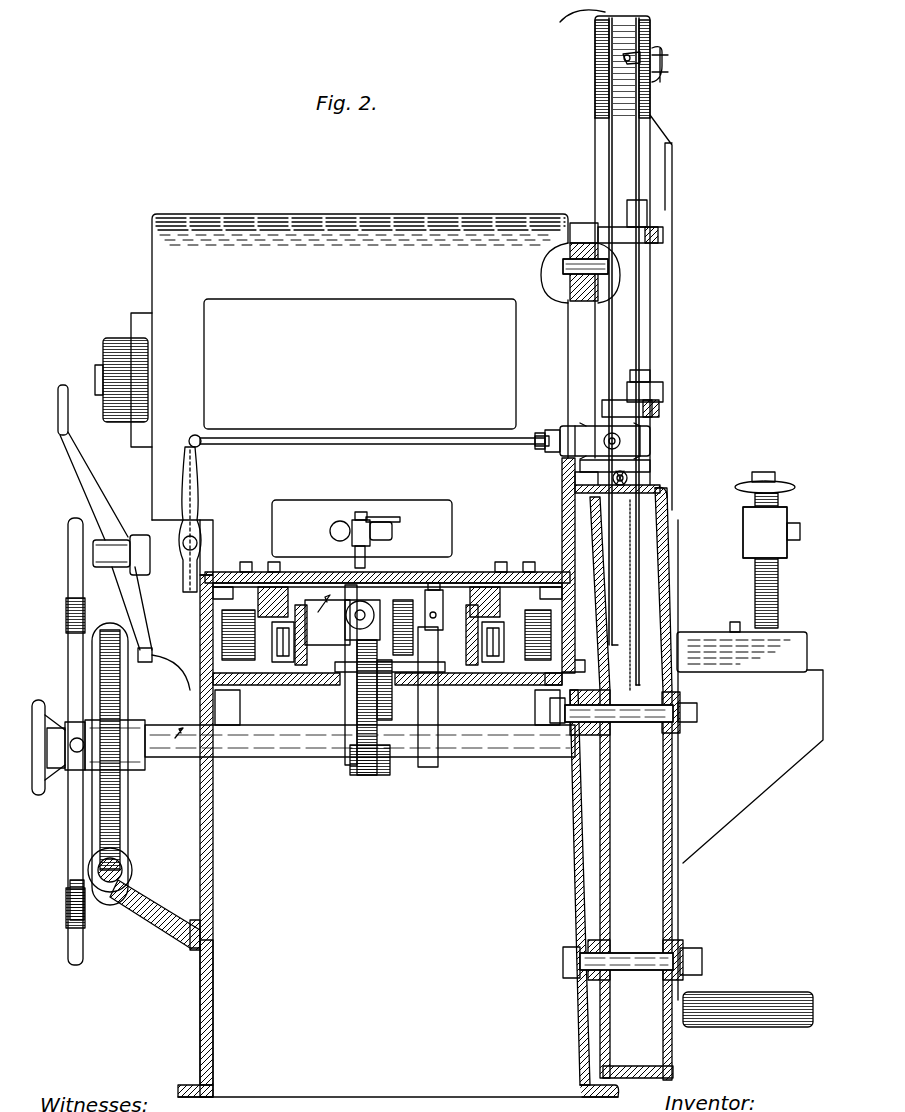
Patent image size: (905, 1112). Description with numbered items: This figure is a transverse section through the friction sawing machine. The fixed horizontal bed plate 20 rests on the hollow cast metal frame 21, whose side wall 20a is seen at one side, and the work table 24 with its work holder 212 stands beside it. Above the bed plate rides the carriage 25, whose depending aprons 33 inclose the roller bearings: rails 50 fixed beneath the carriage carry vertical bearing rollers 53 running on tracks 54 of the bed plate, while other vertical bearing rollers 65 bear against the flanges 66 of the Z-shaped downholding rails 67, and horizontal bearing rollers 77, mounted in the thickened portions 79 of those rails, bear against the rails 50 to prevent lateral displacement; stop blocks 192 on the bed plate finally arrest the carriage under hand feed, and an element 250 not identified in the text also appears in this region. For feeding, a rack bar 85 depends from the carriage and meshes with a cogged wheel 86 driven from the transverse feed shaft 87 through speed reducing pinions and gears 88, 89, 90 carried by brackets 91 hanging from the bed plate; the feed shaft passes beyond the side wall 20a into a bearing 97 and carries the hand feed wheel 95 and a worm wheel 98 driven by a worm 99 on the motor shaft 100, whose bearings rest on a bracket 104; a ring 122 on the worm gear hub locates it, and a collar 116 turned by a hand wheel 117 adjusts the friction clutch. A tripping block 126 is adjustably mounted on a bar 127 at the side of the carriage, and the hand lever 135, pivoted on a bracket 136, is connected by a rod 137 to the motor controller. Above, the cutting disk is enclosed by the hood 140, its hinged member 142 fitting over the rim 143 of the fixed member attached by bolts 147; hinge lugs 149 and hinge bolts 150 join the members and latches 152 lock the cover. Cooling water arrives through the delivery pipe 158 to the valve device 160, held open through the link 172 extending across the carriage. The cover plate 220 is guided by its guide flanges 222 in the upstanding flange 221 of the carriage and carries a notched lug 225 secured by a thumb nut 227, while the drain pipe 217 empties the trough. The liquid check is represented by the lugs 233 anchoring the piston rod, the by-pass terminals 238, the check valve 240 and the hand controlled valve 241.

The rim 143 is at (563, 26).
The hood 140 is at (655, 22).
The latches or keepers 152 is at (660, 62).
The outer hinged member 142 is at (655, 116).
The bolts 147 is at (590, 248).
The hinge bolts 150 is at (648, 203).
The hinge lugs 149 is at (650, 400).
The valve device 160 is at (578, 438).
The delivery pipe 158 is at (622, 437).
The notched lug 225 is at (628, 464).
The thumb nut 227 is at (635, 477).
The upstanding flange 221 is at (560, 480).
The guide flanges 222 is at (566, 505).
The cover plate 220 is at (665, 522).
The work holder 212 is at (780, 580).
The work table 24 is at (740, 780).
The drain pipe 217 is at (780, 1028).
The rails 50 is at (352, 216).
The link 172 is at (312, 438).
The tripping block 126 is at (183, 580).
The link or rod 137 is at (183, 568).
The hand lever 135 is at (85, 488).
The bracket 136 is at (140, 540).
The hand feed wheel 95 is at (68, 635).
The vertical bearing rollers 53 is at (228, 595).
The carriage 25 is at (395, 575).
The check valve 240 is at (340, 513).
The hand controlled valve 241 is at (378, 516).
The terminals 238 is at (358, 520).
The lugs 233 is at (325, 558).
The rack bar 85 is at (410, 572).
The flanges 66 is at (284, 600).
The horizontal bearing rollers 77 is at (295, 600).
The bar 127 is at (385, 635).
The vertical bearing rollers 65 is at (286, 668).
The eccentric 250 is at (338, 621).
The cogged wheel 86 is at (413, 615).
The thickened portions 79 is at (432, 660).
The brackets 91 is at (345, 708).
The speed reducing gear 89 is at (365, 778).
The speed reducing pinion 88 is at (380, 778).
The speed reducing gear 90 is at (400, 730).
The feed shaft 87 is at (278, 720).
The bearing 97 is at (210, 790).
The downholding rails 67 is at (262, 695).
The stop blocks 192 is at (260, 686).
The bed plate 20 is at (476, 710).
The tracks 54 is at (560, 710).
The side wall 20a is at (213, 860).
The hollow cast metal frame 21 is at (198, 1030).
The depending aprons 33 is at (215, 658).
The hand wheel 117 is at (40, 705).
The collar 116 is at (68, 780).
The ring 122 is at (135, 770).
The worm wheel 98 is at (108, 630).
The motor shaft 100 is at (132, 862).
The worm 99 is at (110, 895).
The bracket 104 is at (160, 922).